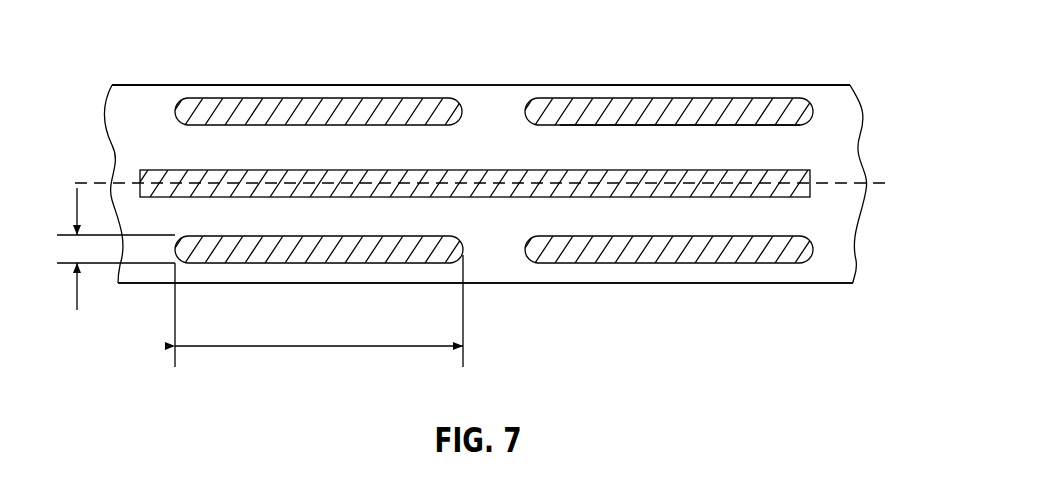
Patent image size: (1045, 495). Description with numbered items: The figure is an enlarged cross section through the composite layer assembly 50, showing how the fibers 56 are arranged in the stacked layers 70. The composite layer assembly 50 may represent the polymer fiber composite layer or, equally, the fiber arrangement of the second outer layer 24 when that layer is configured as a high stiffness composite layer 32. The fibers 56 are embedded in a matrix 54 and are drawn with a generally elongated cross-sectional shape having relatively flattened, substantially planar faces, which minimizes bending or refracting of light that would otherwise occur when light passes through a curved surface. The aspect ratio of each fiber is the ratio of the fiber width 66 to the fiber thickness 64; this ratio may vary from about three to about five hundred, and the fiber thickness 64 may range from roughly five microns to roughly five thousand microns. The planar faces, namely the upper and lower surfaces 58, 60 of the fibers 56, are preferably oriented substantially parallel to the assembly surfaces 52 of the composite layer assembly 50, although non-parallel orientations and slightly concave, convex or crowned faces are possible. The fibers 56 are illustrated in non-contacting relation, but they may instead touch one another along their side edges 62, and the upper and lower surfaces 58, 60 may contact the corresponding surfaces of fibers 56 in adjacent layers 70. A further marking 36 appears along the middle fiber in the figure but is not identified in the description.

The second outer layer 24 is at (832, 85).
The high stiffness composite layer 32 is at (773, 85).
The centerline axis 36 is at (88, 182).
The composite layer assembly 50 is at (145, 84).
The assembly surfaces 52 is at (718, 85).
The matrix 54 is at (832, 270).
The fibers 56 is at (265, 110).
The upper surface 58 is at (640, 98).
The lower surface 60 is at (600, 126).
The side edges 62 is at (525, 108).
The fiber thickness 64 is at (78, 295).
The fiber width 66 is at (318, 350).
The layers 70 is at (813, 108).